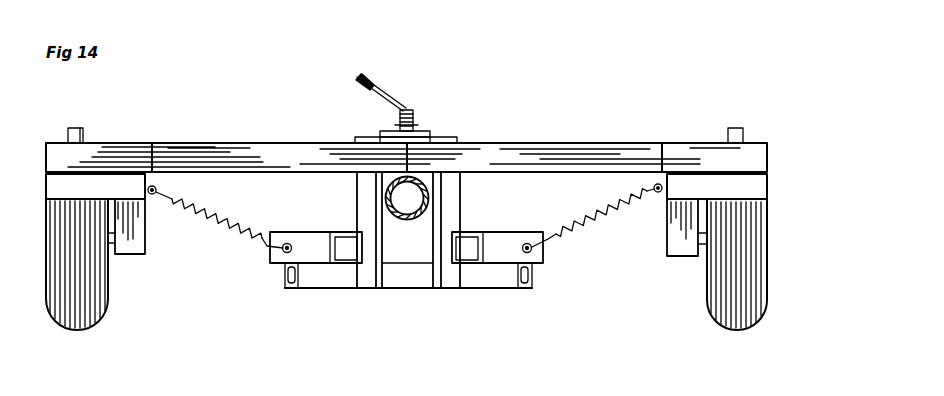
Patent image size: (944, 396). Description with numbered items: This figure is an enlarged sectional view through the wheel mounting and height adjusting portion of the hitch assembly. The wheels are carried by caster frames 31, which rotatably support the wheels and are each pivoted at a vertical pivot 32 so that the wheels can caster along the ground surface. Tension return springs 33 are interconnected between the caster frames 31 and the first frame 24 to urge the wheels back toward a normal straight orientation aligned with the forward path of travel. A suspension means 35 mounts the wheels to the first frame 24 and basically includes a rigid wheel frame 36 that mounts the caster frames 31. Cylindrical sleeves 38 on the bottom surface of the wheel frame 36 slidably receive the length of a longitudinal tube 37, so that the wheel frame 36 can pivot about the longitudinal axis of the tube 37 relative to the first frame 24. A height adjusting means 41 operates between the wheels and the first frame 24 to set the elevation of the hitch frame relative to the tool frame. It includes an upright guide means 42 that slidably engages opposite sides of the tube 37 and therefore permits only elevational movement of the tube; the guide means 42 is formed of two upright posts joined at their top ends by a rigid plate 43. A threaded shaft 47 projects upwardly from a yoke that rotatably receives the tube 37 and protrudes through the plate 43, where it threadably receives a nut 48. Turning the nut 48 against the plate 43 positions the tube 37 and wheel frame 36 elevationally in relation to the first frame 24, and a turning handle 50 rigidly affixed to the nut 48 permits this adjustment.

The first frame 24 is at (482, 231).
The caster frames 31 is at (95, 188).
The pivots 32 is at (98, 111).
The tension return springs 33 is at (220, 215).
The suspension means 35 is at (489, 141).
The wheel frame 36 is at (277, 152).
The longitudinal tube 37 is at (418, 194).
The cylindrical sleeves 38 is at (386, 210).
The height adjusting means 41 is at (426, 124).
The upright guide means 42 is at (431, 244).
The rigid plate 43 is at (432, 131).
The shaft 47 is at (406, 110).
The nut 48 is at (392, 125).
The turning handle 50 is at (354, 80).